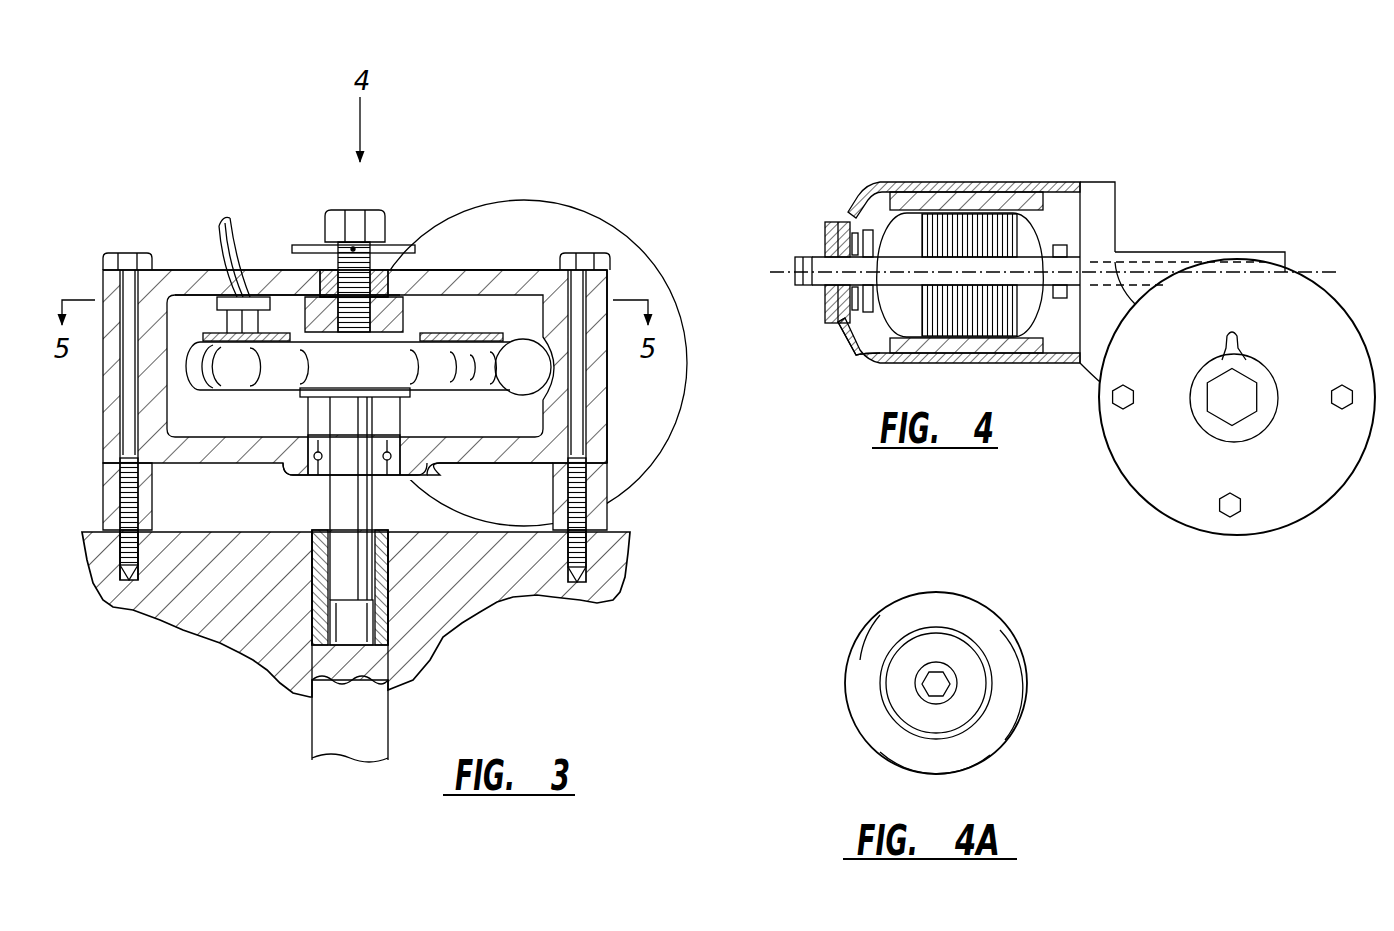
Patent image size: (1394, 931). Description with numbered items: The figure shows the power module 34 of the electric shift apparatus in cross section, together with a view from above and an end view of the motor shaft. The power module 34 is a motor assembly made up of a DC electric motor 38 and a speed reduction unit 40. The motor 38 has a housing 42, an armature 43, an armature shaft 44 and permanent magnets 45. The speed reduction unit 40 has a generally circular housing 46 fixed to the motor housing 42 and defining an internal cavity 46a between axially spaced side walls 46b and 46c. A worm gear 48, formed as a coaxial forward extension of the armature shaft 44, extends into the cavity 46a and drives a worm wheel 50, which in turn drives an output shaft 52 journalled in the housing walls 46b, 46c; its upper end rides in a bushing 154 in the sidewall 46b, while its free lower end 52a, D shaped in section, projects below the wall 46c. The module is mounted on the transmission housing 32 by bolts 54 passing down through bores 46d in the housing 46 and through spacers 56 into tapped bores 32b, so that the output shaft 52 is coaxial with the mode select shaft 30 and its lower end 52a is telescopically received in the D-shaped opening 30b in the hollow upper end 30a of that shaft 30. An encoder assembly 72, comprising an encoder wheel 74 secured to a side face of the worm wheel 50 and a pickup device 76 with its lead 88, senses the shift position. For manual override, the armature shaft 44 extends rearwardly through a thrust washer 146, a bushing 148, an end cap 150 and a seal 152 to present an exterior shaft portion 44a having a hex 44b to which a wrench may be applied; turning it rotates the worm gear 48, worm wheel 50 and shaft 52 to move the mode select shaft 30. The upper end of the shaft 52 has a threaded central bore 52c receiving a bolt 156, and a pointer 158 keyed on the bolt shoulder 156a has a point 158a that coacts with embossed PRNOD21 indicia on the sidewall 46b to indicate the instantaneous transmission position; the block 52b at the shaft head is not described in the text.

In FIG. 3, the mode select shaft 30 is at (308, 727).
In FIG. 3, the hollow upper end 30a is at (280, 678).
In FIG. 3, the D-shaped opening 30b is at (372, 625).
In FIG. 3, the transmission housing 32 is at (203, 598).
In FIG. 3, the tapped bores 32b is at (115, 562).
In FIG. 3, the power module 34 is at (175, 210).
In FIG. 4, the power module 34 is at (1291, 223).
In FIG. 3, the DC electric motor 38 is at (660, 272).
In FIG. 4, the DC electric motor 38 is at (1065, 178).
In FIG. 4A, the DC electric motor 38 is at (905, 594).
In FIG. 4, the speed reduction unit 40 is at (1190, 539).
In FIG. 4, the motor housing 42 is at (988, 180).
In FIG. 4A, the motor housing 42 is at (983, 606).
In FIG. 4, the armature 43 is at (1032, 224).
In FIG. 4, the armature shaft 44 is at (905, 252).
In FIG. 4, the shaft portion 44a is at (830, 292).
In FIG. 4, the hex cross sectional configuration 44b is at (796, 278).
In FIG. 4A, the hex cross sectional configuration 44b is at (950, 684).
In FIG. 4, the permanent magnets 45 is at (925, 200).
In FIG. 3, the circular housing 46 is at (612, 428).
In FIG. 4, the circular housing 46 is at (1168, 484).
In FIG. 3, the internal cavity 46a is at (492, 312).
In FIG. 3, the side wall 46b is at (540, 268).
In FIG. 4, the side wall 46b is at (1286, 474).
In FIG. 3, the side wall 46c is at (450, 465).
In FIG. 3, the bores 46d is at (585, 442).
In FIG. 3, the worm gear 48 is at (537, 368).
In FIG. 4, the worm gear 48 is at (1192, 258).
In FIG. 3, the worm wheel 50 is at (258, 384).
In FIG. 3, the output shaft 52 is at (350, 416).
In FIG. 3, the lower end 52a is at (345, 555).
In FIG. 3, the rod mounting block 52b is at (403, 313).
In FIG. 3, the threaded central bore 52c is at (343, 267).
In FIG. 3, the bolts 54 is at (140, 253).
In FIG. 4, the bolts 54 is at (1242, 508).
In FIG. 3, the spacers 56 is at (600, 522).
In FIG. 3, the encoder assembly 72 is at (251, 222).
In FIG. 3, the encoder wheel 74 is at (500, 332).
In FIG. 3, the pickup device 76 is at (268, 310).
In FIG. 3, the lead 88 is at (222, 236).
In FIG. 4, the thrust washer 146 is at (862, 225).
In FIG. 4, the bushing 148 is at (843, 315).
In FIG. 4, the end cap 150 is at (840, 223).
In FIG. 4A, the end cap 150 is at (972, 662).
In FIG. 4, the seal 152 is at (830, 253).
In FIG. 3, the bushing 154 is at (388, 282).
In FIG. 3, the bolt 156 is at (382, 208).
In FIG. 4, the bolt 156 is at (1237, 388).
In FIG. 3, the shoulder portion 156a is at (352, 249).
In FIG. 3, the pointer 158 is at (403, 244).
In FIG. 4, the pointer 158 is at (1216, 436).
In FIG. 4, the point 158a is at (1242, 348).